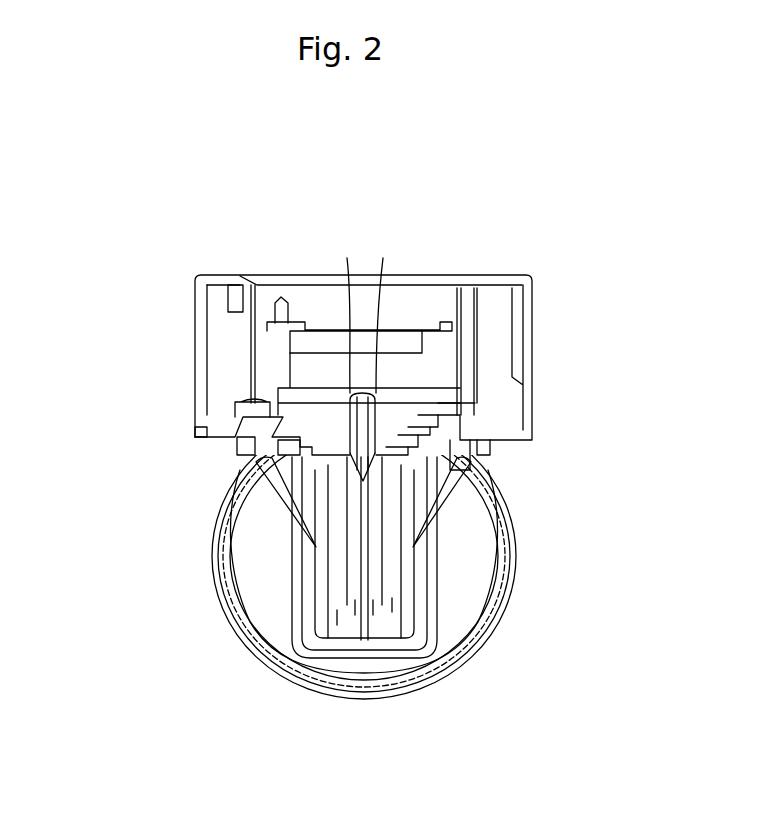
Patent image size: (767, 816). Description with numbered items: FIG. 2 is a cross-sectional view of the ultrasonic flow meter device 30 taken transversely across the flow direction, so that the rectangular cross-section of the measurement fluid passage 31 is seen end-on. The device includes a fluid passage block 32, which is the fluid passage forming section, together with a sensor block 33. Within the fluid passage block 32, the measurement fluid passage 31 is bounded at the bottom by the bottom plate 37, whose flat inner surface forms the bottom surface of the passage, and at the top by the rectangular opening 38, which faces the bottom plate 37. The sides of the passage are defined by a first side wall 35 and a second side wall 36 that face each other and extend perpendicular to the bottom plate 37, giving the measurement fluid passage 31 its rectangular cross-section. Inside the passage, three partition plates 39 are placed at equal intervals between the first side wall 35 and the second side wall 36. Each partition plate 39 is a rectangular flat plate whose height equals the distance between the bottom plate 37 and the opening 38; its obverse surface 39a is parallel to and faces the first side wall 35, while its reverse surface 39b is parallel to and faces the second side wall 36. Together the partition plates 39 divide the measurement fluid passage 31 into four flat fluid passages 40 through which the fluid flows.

The ultrasonic flow meter device 30 is at (279, 247).
The measurement fluid passage 31 is at (330, 610).
The fluid passage block 32 is at (517, 583).
The sensor block 33 is at (376, 457).
The first side wall 35 is at (318, 502).
The second side wall 36 is at (405, 557).
The bottom plate 37 is at (337, 648).
The opening 38 is at (378, 452).
The partition plate 39 is at (348, 547).
The obverse surface 39a is at (334, 310).
The reverse surface 39b is at (406, 310).
The flat fluid passage 40 is at (392, 603).